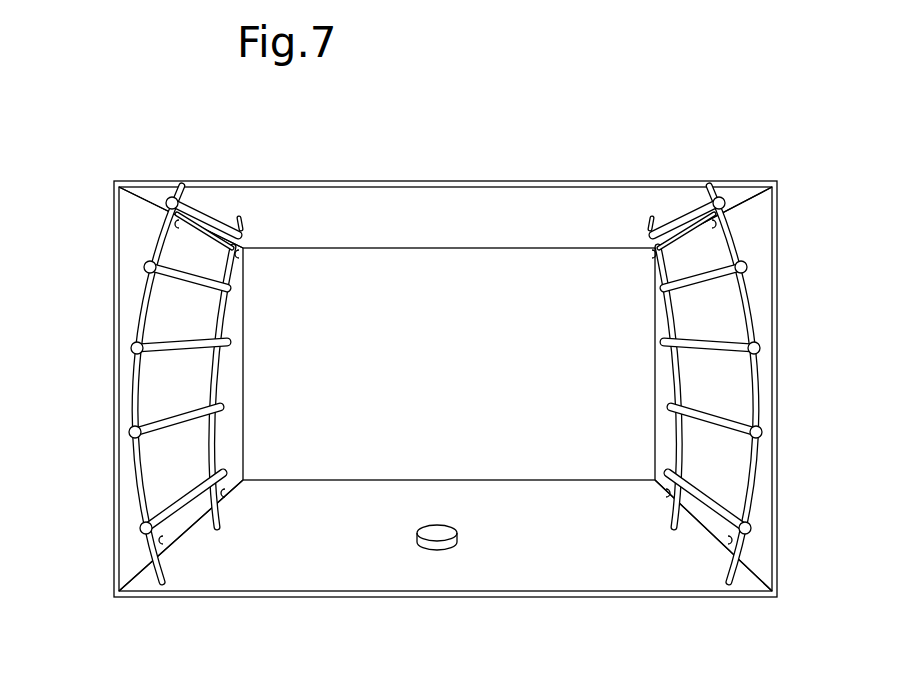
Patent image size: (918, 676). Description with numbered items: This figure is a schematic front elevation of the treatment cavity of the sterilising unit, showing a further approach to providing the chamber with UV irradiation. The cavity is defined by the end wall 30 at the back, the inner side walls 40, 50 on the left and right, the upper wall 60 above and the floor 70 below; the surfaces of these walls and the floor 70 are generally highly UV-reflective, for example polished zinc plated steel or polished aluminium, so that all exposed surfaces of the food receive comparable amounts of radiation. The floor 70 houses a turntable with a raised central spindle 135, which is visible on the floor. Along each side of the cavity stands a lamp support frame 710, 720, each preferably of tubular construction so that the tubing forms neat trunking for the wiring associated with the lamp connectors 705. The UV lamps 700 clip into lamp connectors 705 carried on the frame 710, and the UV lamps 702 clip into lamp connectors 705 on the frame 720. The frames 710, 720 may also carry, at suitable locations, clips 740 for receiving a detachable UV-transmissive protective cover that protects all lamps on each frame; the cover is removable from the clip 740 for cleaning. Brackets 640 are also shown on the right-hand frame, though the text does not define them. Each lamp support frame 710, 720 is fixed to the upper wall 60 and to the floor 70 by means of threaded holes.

The end wall 30 is at (497, 295).
The inner side wall 40 is at (137, 560).
The inner side wall 50 is at (763, 403).
The upper wall 60 is at (418, 210).
The floor 70 is at (580, 548).
The raised central spindle 135 is at (455, 540).
The hook bracket 640 is at (653, 253).
The UV lamp 700 is at (210, 220).
The UV lamp 702 is at (688, 207).
The lamp connector 705 is at (168, 203).
The lamp support frame 710 is at (142, 515).
The lamp support frame 720 is at (742, 515).
The clip 740 is at (218, 500).